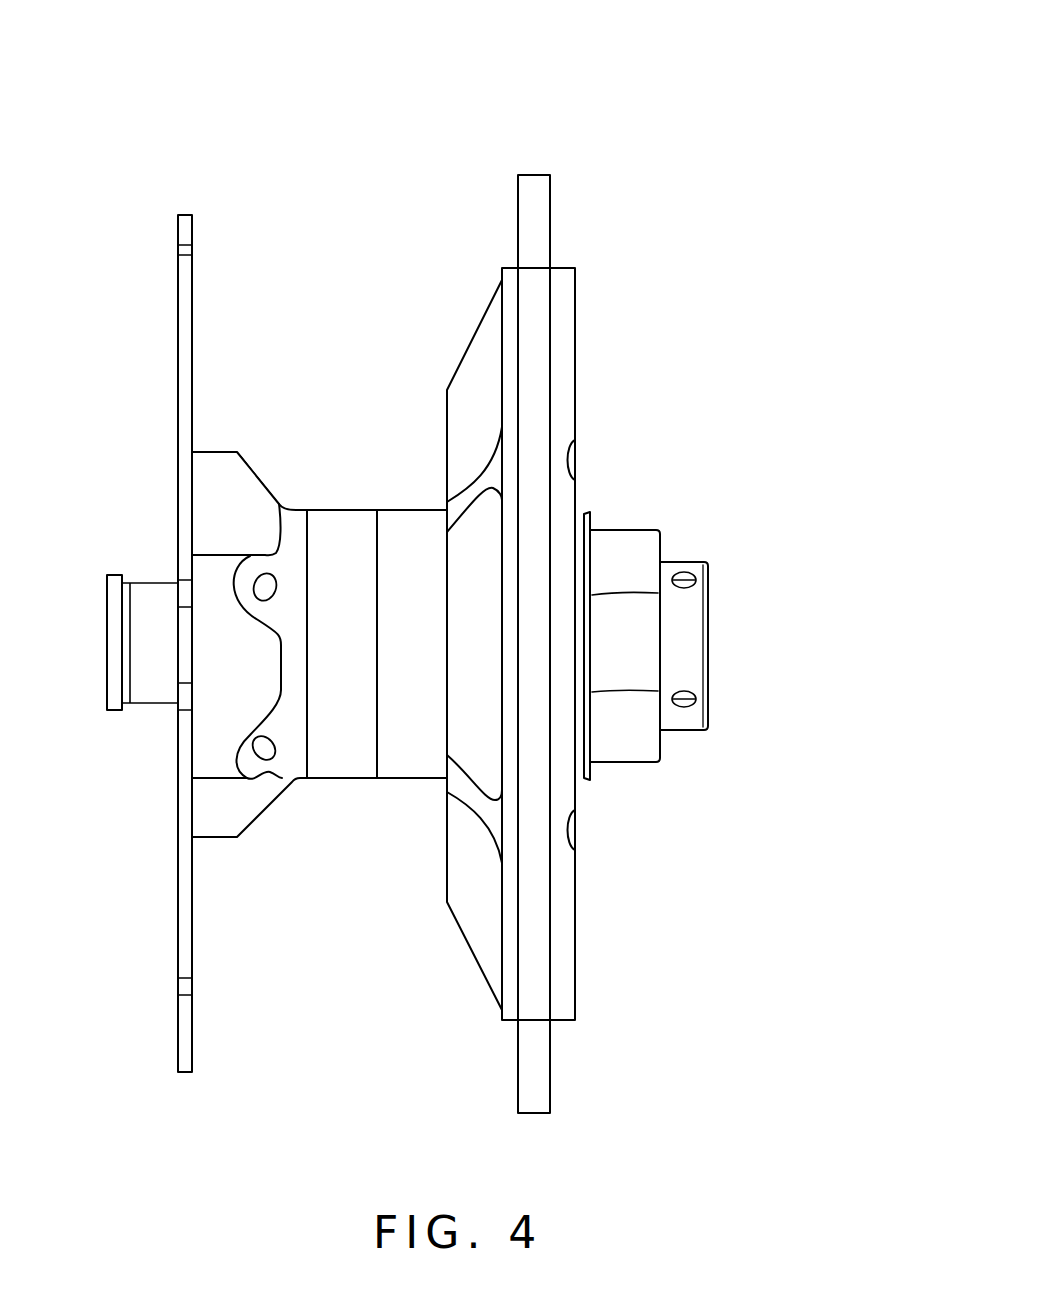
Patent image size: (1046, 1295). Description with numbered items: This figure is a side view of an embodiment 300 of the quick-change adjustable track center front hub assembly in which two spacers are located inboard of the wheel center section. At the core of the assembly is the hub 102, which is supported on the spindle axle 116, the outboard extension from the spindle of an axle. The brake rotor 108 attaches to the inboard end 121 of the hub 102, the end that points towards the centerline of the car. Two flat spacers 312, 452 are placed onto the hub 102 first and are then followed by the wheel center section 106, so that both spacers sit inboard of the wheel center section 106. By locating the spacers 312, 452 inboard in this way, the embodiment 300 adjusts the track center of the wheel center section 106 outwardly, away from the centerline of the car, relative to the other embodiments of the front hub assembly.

The embodiment of the front hub assembly 300 is at (803, 130).
The brake rotor 108 is at (180, 1042).
The spindle axle 116 is at (150, 598).
The inboard end 121 is at (210, 413).
The spacer 312 is at (333, 758).
The spacer 452 is at (408, 757).
The wheel center section 106 is at (535, 1098).
The hub 102 is at (692, 643).